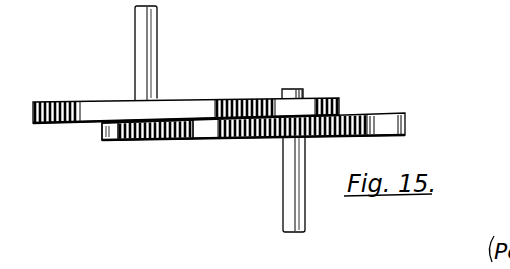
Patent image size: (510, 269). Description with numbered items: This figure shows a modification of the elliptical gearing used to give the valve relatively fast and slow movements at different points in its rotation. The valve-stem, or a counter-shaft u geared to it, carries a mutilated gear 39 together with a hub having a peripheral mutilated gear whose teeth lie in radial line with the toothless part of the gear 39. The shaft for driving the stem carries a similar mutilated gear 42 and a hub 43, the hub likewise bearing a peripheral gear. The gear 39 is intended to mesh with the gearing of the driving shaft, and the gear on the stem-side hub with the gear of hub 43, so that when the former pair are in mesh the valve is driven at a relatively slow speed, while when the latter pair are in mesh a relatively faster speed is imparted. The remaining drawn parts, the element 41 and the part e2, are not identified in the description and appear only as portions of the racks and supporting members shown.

The mutilated gear 39 is at (92, 101).
The lower rack bar left portion 41 is at (112, 141).
The gear 42 is at (386, 136).
The hub 43 is at (313, 97).
The upper post / arm e2 is at (156, 54).
The counter-shaft u is at (284, 188).